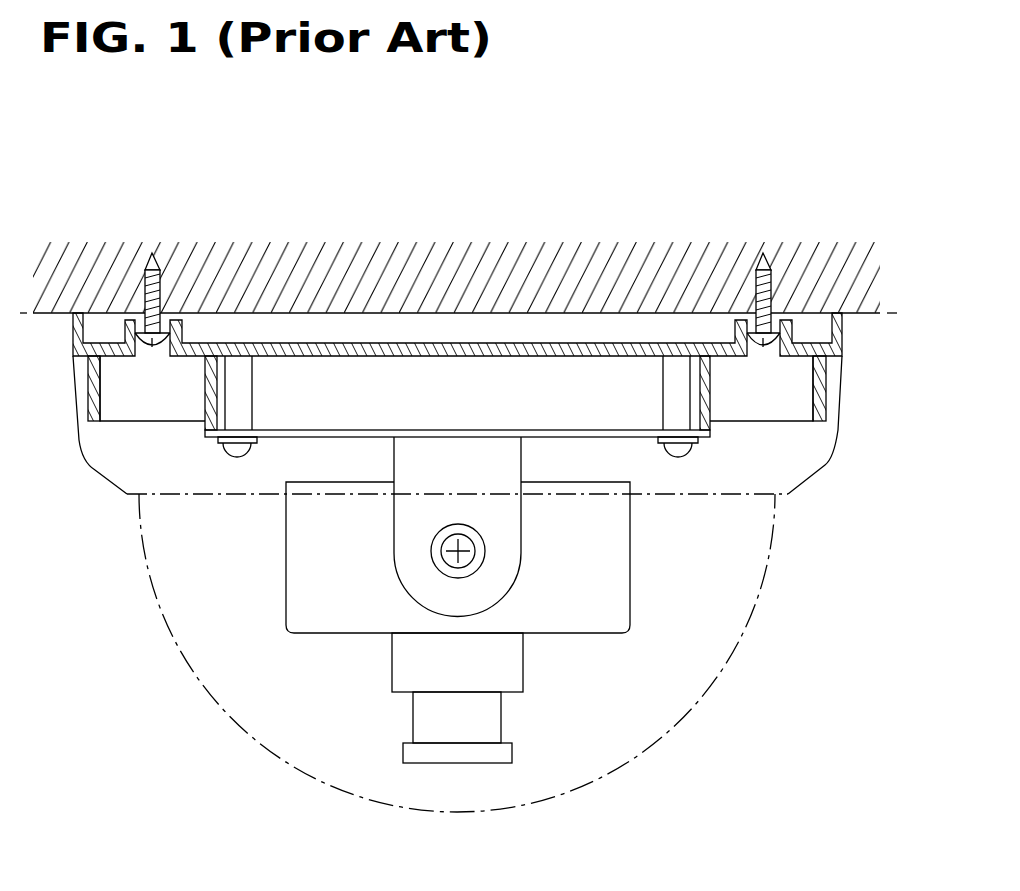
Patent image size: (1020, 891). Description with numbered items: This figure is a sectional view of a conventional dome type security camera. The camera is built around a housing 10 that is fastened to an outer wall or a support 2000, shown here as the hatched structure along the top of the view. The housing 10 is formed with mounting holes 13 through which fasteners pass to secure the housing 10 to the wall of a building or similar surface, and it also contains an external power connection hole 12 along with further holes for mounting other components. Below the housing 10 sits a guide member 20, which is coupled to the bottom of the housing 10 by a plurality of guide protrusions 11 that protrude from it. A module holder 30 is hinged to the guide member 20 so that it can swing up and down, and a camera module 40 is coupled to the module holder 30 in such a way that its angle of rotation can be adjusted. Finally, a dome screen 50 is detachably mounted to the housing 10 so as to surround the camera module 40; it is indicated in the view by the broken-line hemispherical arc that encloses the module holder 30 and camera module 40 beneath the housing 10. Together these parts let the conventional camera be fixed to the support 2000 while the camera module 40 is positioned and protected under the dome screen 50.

The housing 10 is at (842, 330).
The guide protrusions 11 is at (672, 384).
The external power connection hole 12 is at (572, 348).
The mounting holes 13 is at (138, 323).
The guide member 20 is at (278, 438).
The module holder 30 is at (617, 580).
The camera module 40 is at (463, 753).
The dome screen 50 is at (683, 715).
The support 2000 is at (442, 287).